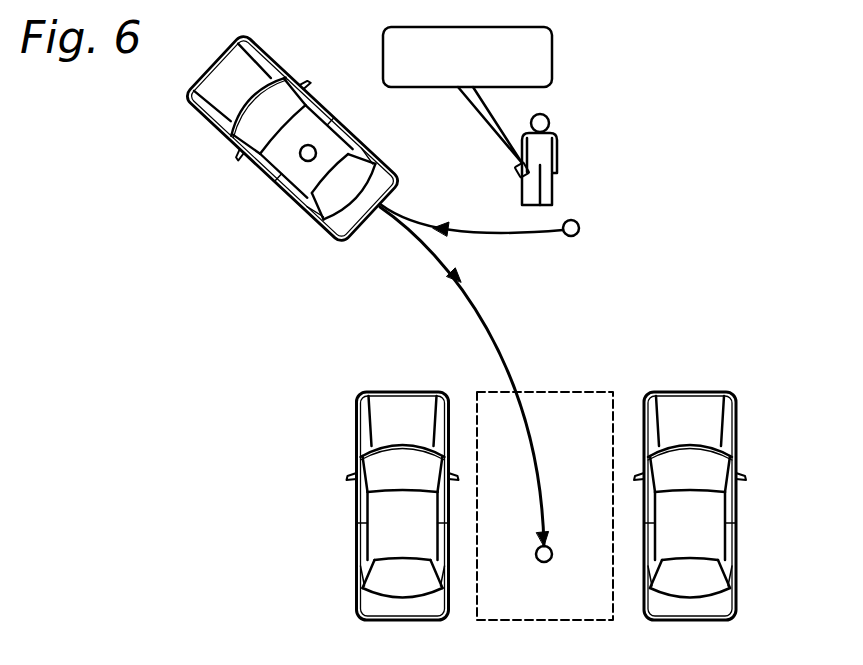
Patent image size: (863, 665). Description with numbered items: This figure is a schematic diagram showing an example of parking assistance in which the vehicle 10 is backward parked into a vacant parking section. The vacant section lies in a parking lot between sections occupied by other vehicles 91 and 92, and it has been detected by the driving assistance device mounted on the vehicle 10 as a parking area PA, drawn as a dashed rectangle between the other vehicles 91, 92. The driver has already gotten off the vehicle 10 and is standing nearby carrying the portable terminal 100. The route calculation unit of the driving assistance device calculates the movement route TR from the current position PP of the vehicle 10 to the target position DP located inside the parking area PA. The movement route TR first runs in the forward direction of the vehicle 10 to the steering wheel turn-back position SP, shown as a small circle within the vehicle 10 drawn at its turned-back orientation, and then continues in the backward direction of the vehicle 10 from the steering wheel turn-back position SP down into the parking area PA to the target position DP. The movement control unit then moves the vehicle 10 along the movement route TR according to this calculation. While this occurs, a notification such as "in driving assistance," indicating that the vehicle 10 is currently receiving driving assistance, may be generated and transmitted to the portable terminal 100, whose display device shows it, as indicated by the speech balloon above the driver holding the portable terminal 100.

The vehicle 10 is at (385, 160).
The portable terminal 100 is at (508, 178).
The other vehicle 91 is at (357, 527).
The other vehicle 92 is at (735, 523).
The steering wheel turn-back position SP is at (312, 160).
The current position PP is at (572, 237).
The target position DP is at (542, 563).
The movement route TR is at (448, 323).
The parking area PA is at (603, 392).